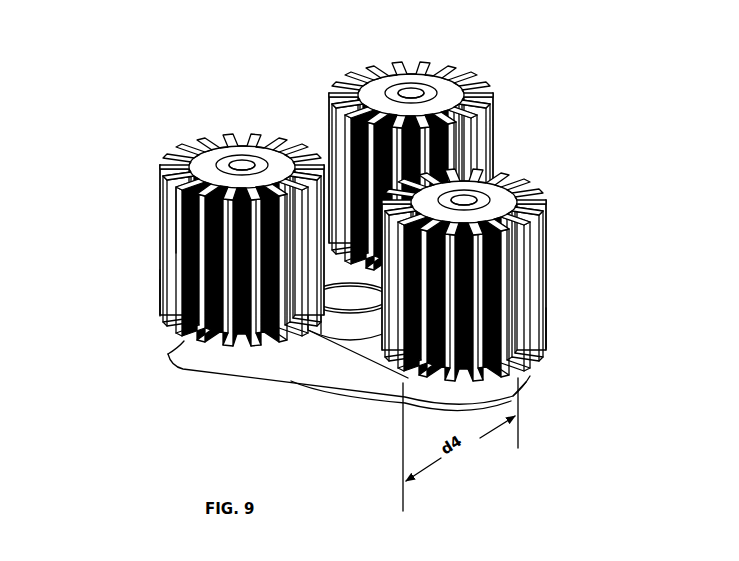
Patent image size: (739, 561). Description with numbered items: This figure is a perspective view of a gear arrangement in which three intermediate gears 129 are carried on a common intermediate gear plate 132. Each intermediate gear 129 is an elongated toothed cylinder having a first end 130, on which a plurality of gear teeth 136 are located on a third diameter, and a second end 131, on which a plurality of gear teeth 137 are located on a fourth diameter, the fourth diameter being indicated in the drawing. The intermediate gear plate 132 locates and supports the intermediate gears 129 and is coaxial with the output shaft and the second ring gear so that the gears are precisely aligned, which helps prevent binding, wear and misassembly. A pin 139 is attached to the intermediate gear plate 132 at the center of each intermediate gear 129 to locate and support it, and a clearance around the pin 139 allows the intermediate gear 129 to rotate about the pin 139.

The intermediate gear 129 is at (346, 207).
The first end 130 is at (206, 140).
The second end 131 is at (172, 338).
The intermediate gear plate 132 is at (218, 364).
The gear teeth 136 is at (167, 194).
The gear teeth 137 is at (151, 309).
The pin 139 is at (405, 88).